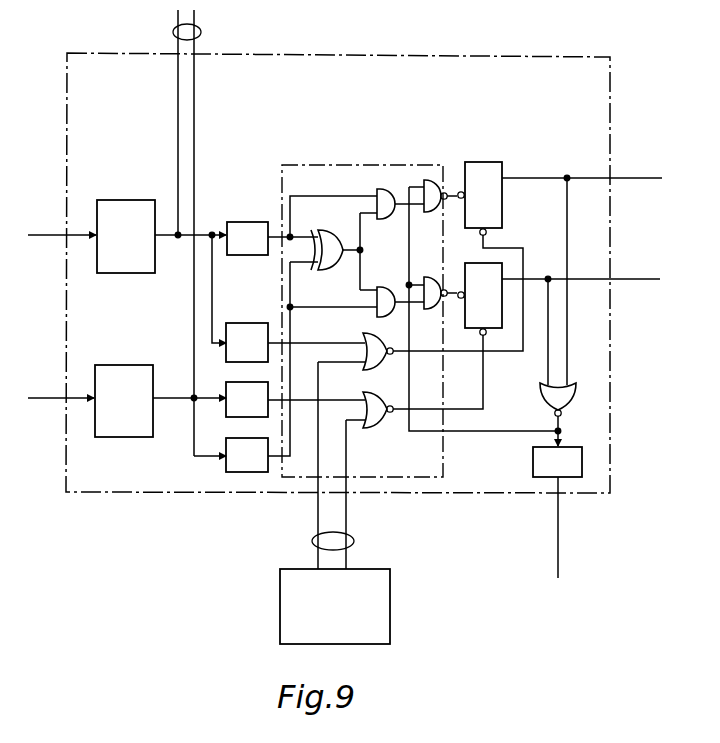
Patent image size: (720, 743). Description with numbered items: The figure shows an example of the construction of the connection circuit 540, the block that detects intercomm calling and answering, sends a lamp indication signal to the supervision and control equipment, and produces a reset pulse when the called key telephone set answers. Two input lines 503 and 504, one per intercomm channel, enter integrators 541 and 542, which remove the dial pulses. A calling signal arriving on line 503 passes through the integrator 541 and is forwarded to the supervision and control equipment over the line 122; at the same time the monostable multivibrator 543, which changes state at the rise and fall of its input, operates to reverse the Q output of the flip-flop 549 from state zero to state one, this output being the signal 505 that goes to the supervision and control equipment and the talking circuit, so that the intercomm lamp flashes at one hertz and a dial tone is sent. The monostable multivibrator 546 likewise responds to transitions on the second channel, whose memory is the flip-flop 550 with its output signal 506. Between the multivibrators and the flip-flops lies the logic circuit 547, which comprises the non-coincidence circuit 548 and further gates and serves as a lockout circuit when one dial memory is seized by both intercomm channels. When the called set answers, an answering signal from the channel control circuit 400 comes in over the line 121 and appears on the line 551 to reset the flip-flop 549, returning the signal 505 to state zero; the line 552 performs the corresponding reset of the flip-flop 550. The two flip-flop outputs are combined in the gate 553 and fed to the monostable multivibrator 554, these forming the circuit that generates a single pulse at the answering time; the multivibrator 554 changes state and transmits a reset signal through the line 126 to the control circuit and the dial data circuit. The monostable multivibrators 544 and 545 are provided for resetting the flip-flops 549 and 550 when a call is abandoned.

The line 121 is at (354, 541).
The line 122 is at (201, 32).
The line 126 is at (558, 538).
The channel control circuit 400 is at (390, 601).
The line 503 is at (47, 227).
The line 504 is at (47, 390).
The signal 505 is at (633, 178).
The signal 506 is at (632, 279).
The connection circuit 540 is at (468, 56).
The integrator 541 is at (130, 200).
The integrator 542 is at (132, 365).
The monostable multivibrator 543 is at (248, 222).
The monostable multivibrator 544 is at (248, 323).
The monostable multivibrator 545 is at (236, 382).
The monostable multivibrator 546 is at (236, 438).
The logic circuit 547 is at (357, 165).
The non-coincidence circuit 548 is at (335, 229).
The flip-flop 549 is at (493, 153).
The flip-flop 550 is at (478, 254).
The line 551 is at (505, 351).
The line 552 is at (483, 409).
The single pulse generating circuit 553 is at (577, 392).
The monostable multivibrator 554 is at (568, 446).